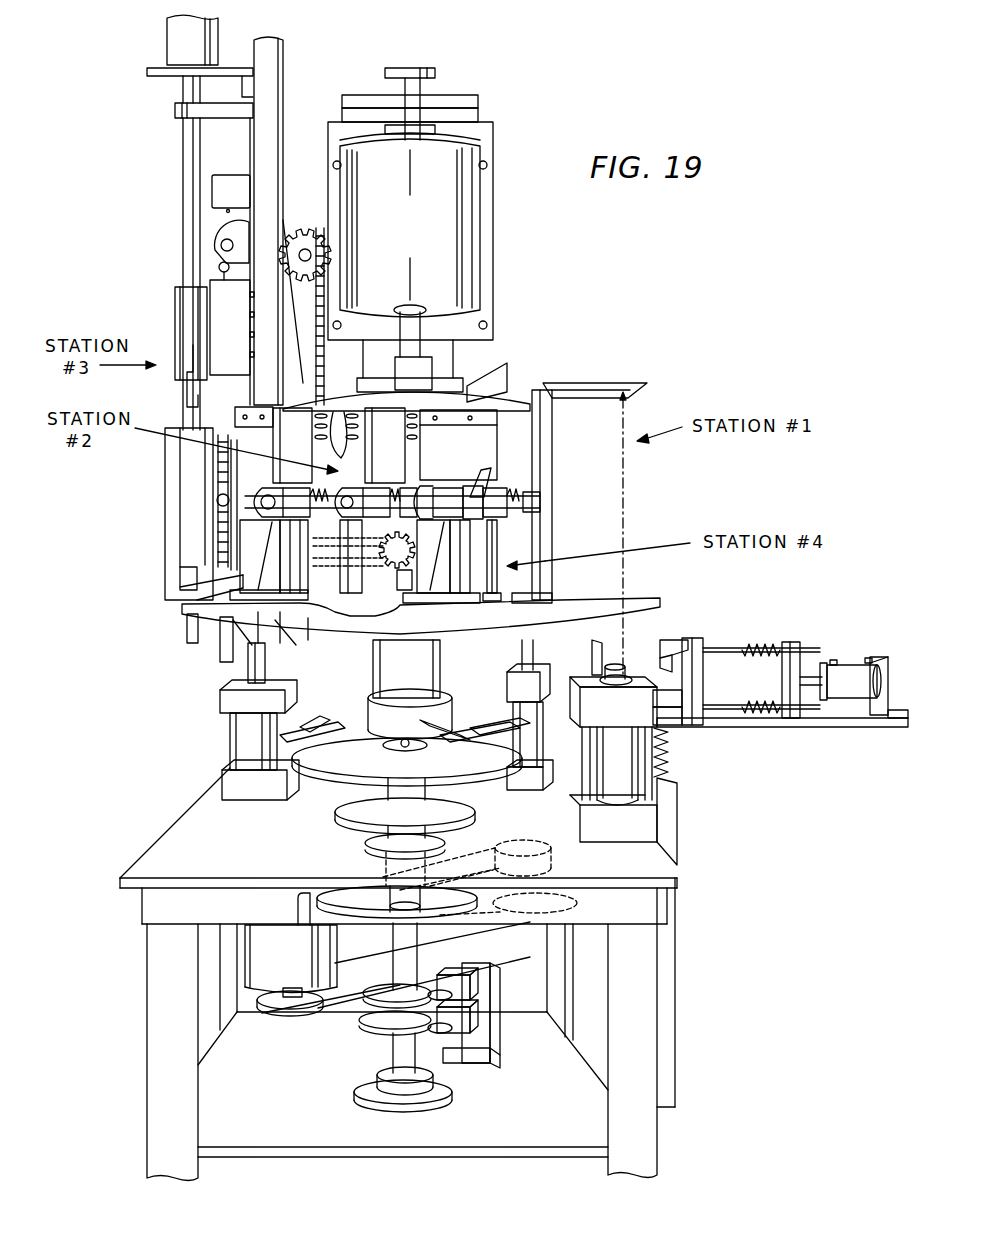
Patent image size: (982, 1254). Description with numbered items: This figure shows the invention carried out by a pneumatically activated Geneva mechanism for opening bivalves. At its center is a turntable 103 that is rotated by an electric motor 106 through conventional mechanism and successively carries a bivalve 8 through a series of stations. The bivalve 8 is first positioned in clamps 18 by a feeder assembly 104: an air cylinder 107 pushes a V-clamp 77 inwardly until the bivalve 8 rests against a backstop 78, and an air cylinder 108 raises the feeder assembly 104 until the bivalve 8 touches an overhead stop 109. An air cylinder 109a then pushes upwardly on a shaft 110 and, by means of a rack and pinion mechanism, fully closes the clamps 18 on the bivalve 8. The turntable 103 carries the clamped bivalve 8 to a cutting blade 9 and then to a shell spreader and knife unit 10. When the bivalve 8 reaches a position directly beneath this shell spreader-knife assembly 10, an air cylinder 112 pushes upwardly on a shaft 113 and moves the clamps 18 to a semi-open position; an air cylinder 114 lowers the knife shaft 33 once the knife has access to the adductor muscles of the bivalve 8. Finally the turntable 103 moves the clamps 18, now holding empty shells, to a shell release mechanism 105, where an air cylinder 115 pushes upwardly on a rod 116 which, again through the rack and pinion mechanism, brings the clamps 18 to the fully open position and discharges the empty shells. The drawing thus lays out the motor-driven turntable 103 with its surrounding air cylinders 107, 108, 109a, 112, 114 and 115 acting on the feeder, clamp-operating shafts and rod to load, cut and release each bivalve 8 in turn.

The bivalve 8 is at (352, 400).
The cutting blade 9 is at (523, 398).
The shell spreader and knife unit 10 is at (185, 312).
The clamps 18 is at (300, 451).
The knife shaft 33 is at (190, 150).
The V-clamp 77 is at (666, 640).
The backstop 78 is at (605, 655).
The turntable 103 is at (565, 594).
The feeder assembly 104 is at (697, 676).
The shell release mechanism 105 is at (505, 548).
The electric motor 106 is at (300, 959).
The air cylinder 107 is at (848, 670).
The air cylinder 108 is at (667, 827).
The overhead stop 109 is at (610, 382).
The air cylinder 109a is at (622, 775).
The shaft 110 is at (218, 655).
The air cylinder 112 is at (237, 747).
The shaft 113 is at (266, 664).
The air cylinder 114 is at (175, 35).
The air cylinder 115 is at (516, 708).
The rod 116 is at (186, 632).